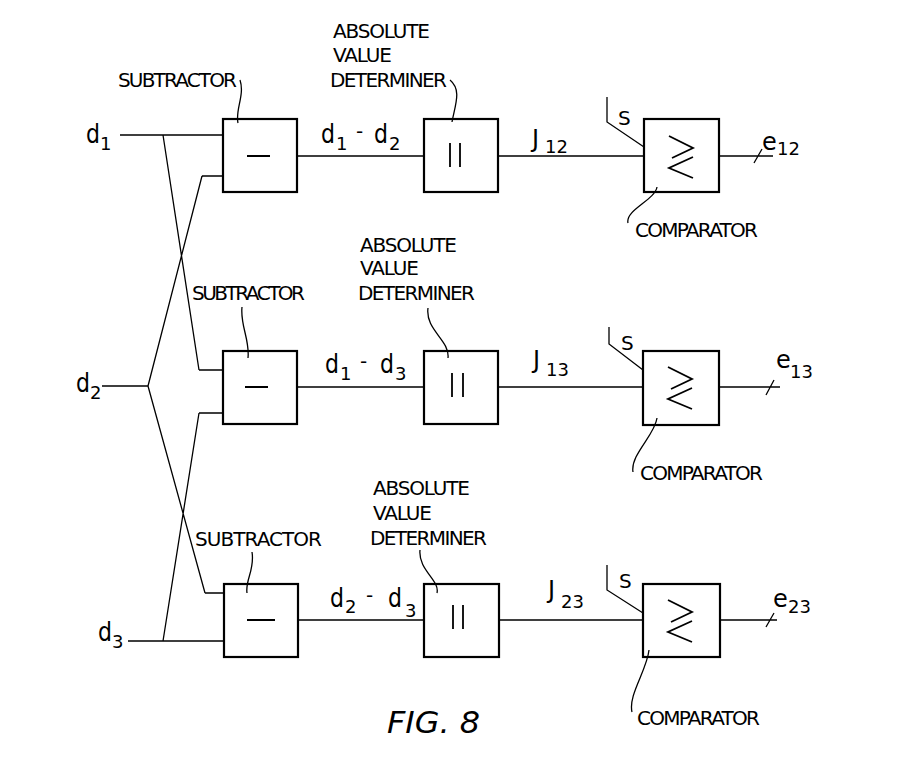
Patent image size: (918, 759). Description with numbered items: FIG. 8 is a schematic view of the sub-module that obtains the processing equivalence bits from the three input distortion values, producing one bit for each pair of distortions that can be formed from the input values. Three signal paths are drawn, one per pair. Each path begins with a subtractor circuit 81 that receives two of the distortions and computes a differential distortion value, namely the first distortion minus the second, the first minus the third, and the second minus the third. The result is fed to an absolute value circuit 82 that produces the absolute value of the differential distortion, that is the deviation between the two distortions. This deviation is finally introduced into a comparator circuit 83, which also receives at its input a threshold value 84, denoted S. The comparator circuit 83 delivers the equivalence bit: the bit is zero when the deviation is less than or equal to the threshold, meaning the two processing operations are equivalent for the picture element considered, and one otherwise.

The subtractor circuit 81 is at (278, 123).
The absolute value circuit 82 is at (483, 125).
The comparator circuit 83 is at (693, 125).
The threshold value 84 is at (607, 110).